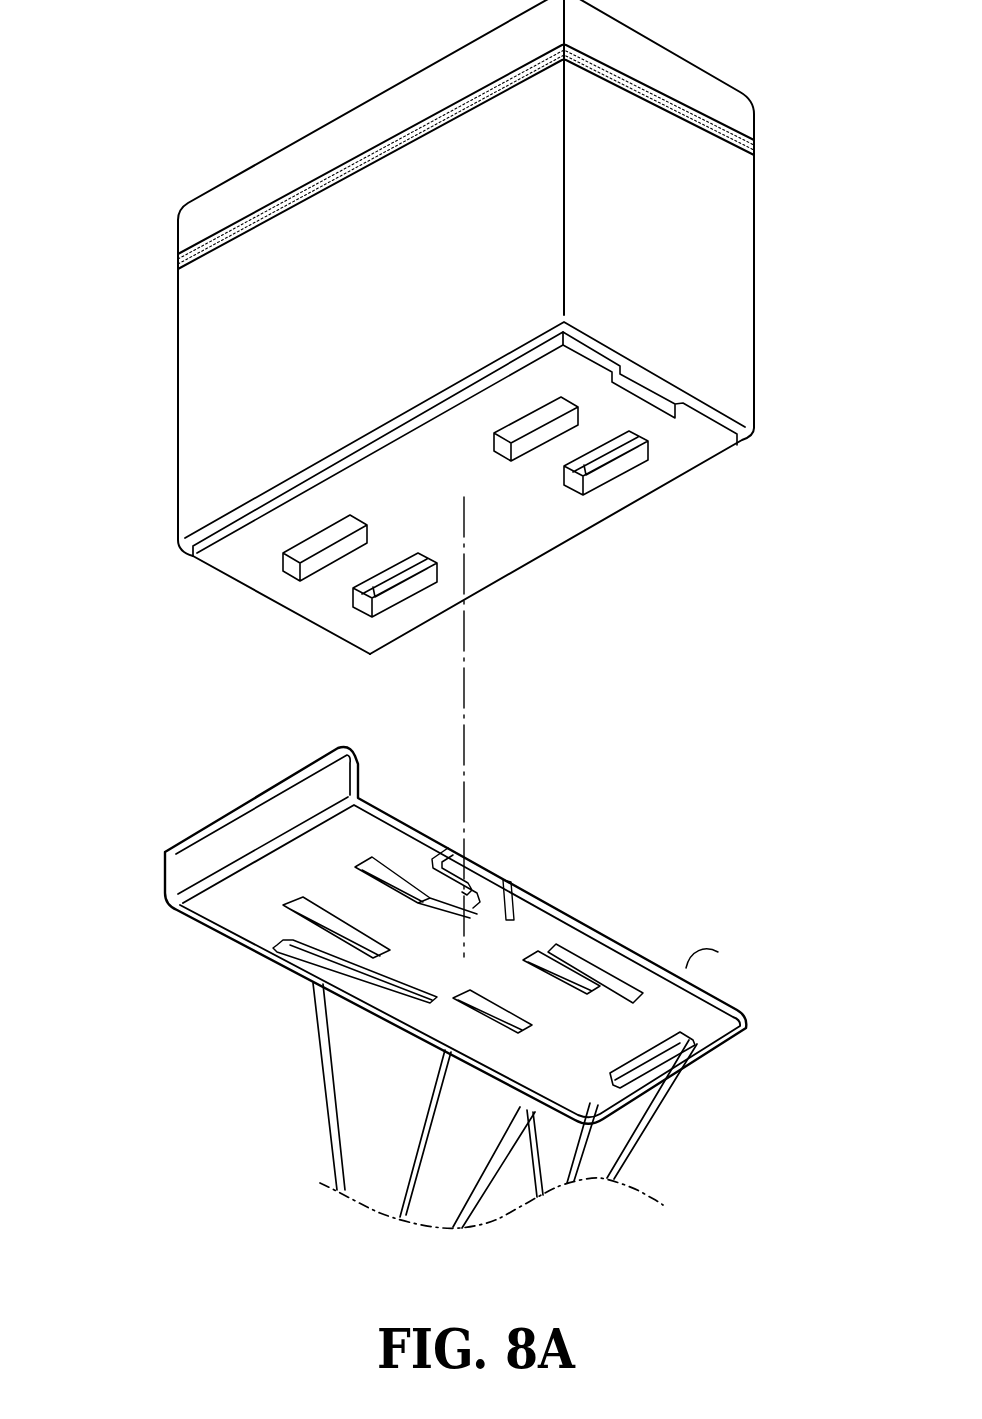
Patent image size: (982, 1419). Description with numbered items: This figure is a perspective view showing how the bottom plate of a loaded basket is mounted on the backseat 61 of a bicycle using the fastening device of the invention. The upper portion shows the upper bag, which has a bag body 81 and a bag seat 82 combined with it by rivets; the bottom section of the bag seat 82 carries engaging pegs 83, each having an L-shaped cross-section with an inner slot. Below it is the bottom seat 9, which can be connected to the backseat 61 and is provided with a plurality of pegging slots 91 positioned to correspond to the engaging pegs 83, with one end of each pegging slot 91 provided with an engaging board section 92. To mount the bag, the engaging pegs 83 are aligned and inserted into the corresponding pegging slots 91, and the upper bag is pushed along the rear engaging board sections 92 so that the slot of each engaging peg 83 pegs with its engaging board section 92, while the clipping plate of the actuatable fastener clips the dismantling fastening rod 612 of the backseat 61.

The bag body 81 is at (205, 350).
The bag seat 82 is at (712, 450).
The engaging peg 83 is at (612, 472).
The backseat 61 is at (487, 871).
The dismantling fastening rod 612 is at (220, 816).
The bottom seat 9 is at (248, 910).
The pegging slot 91 is at (558, 947).
The engaging board section 92 is at (636, 1012).